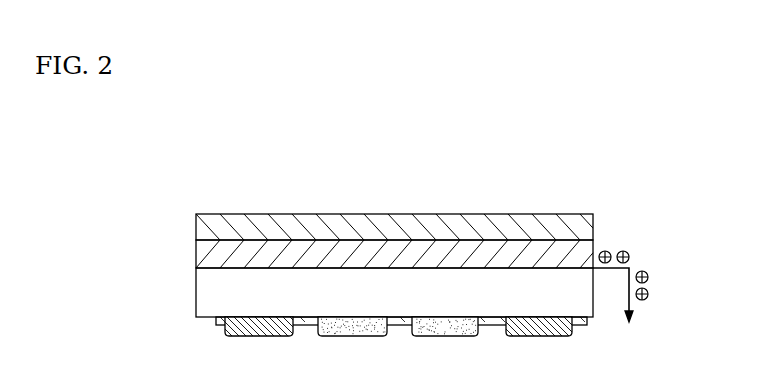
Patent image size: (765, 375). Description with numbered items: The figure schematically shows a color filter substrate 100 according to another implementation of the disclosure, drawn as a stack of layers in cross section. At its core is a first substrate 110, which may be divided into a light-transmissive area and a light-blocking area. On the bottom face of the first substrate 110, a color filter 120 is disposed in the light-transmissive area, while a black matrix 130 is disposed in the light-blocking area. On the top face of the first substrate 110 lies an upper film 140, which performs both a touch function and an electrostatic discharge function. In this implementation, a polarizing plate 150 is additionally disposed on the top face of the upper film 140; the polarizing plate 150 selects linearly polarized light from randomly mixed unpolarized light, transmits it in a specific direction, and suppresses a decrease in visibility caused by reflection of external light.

The color filter substrate 100 is at (210, 189).
The first substrate 110 is at (207, 291).
The color filter 120 is at (223, 332).
The black matrix 130 is at (217, 322).
The upper film 140 is at (208, 253).
The polarizing plate 150 is at (207, 228).